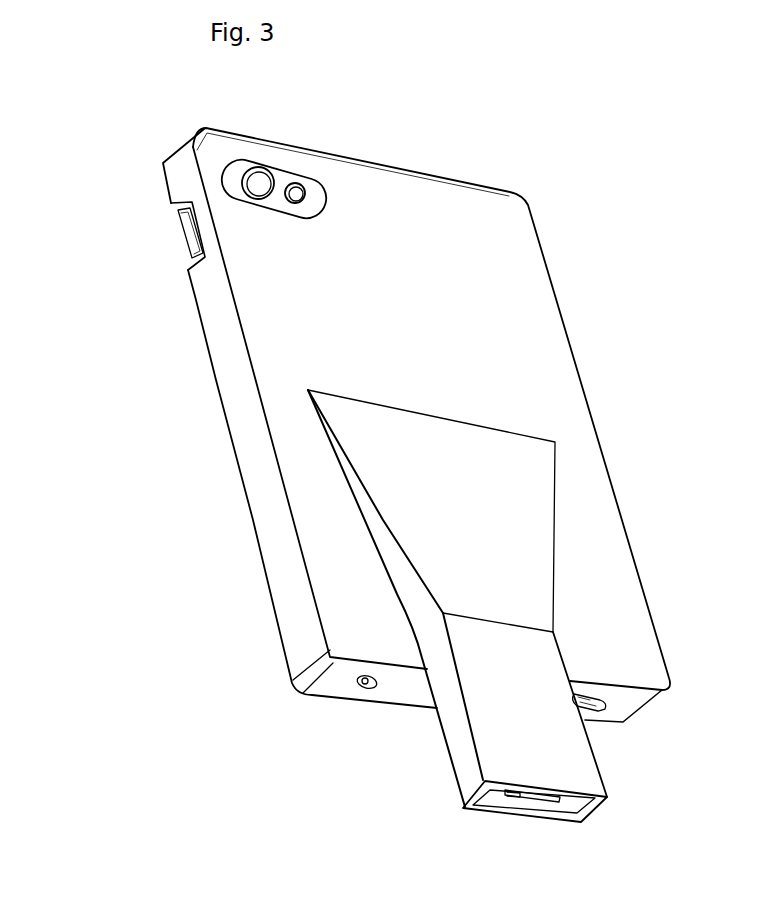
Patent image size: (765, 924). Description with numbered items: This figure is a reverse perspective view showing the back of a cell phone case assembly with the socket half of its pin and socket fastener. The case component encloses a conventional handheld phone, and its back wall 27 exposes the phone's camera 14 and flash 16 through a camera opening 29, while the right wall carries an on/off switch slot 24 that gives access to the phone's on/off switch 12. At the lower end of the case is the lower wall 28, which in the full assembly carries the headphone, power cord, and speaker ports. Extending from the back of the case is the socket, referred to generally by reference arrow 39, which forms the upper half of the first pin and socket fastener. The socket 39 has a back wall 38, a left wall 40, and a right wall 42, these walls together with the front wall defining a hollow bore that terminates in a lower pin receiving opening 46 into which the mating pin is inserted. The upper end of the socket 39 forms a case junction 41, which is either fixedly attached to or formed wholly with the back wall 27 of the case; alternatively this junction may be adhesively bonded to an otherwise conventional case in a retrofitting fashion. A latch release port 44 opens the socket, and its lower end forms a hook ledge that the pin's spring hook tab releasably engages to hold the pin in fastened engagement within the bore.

The on/off switch 12 is at (195, 250).
The camera 14 is at (262, 182).
The flash 16 is at (298, 192).
The on/off switch slot 24 is at (181, 212).
The back wall 27 is at (513, 318).
The lower wall 28 is at (396, 688).
The camera housing 29 is at (320, 187).
The back wall 38 is at (577, 752).
The socket 39 is at (514, 646).
The left wall 40 is at (578, 803).
The case junction 41 is at (513, 543).
The right wall 42 is at (458, 744).
The latch release port 44 is at (523, 793).
The lower pin receiving opening 46 is at (495, 798).